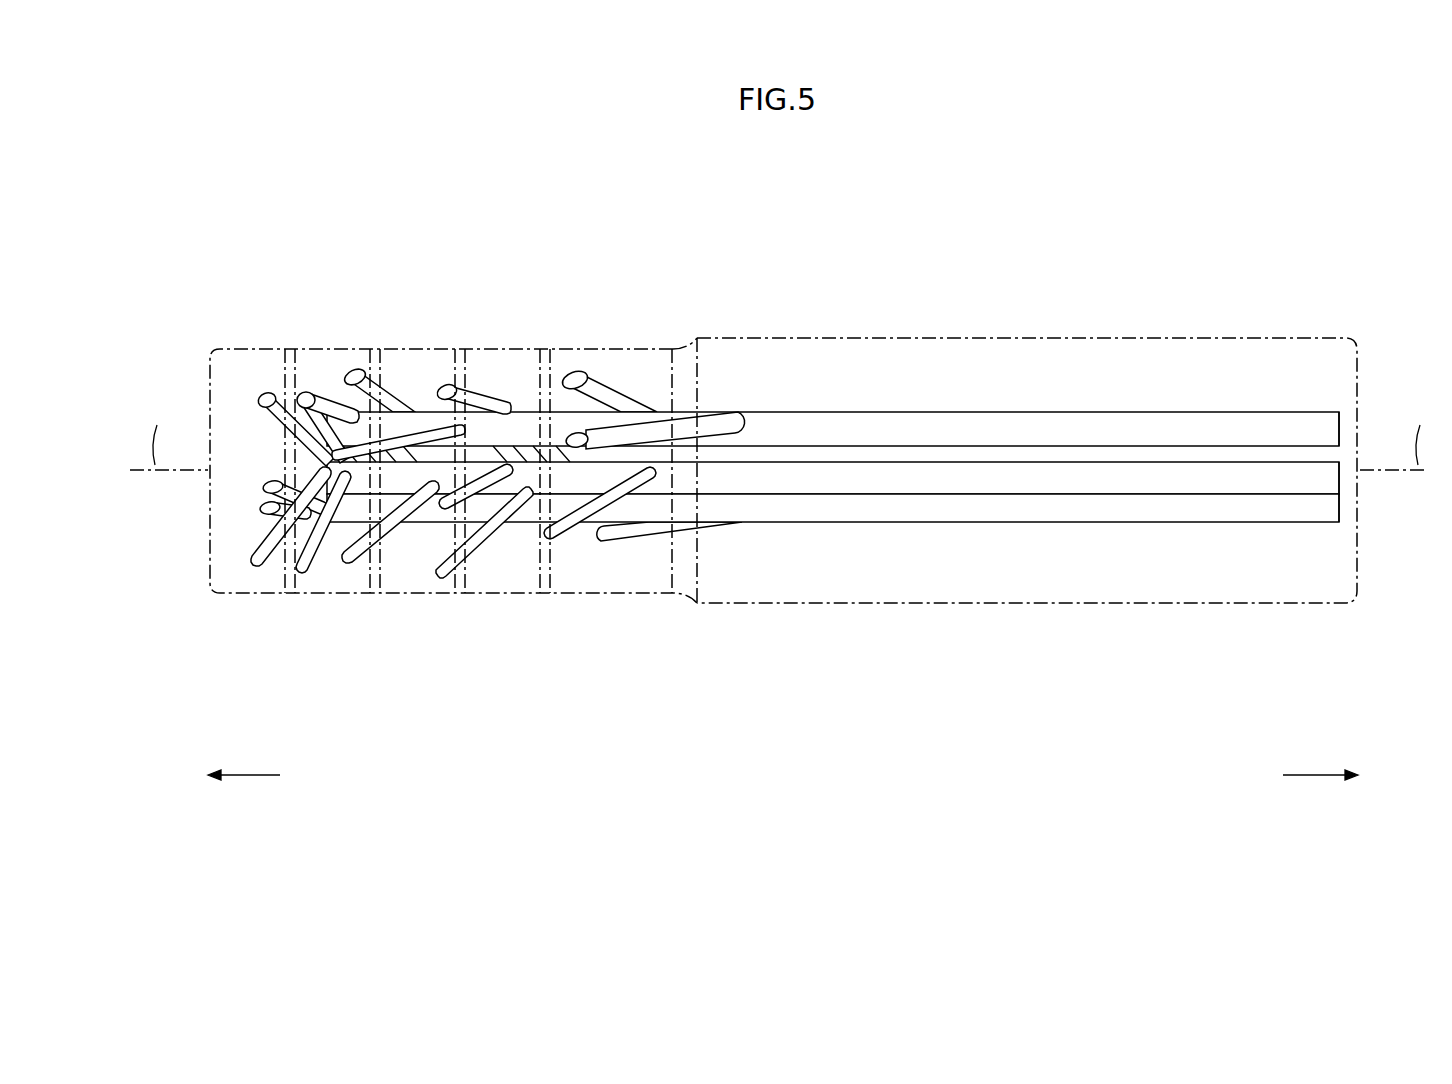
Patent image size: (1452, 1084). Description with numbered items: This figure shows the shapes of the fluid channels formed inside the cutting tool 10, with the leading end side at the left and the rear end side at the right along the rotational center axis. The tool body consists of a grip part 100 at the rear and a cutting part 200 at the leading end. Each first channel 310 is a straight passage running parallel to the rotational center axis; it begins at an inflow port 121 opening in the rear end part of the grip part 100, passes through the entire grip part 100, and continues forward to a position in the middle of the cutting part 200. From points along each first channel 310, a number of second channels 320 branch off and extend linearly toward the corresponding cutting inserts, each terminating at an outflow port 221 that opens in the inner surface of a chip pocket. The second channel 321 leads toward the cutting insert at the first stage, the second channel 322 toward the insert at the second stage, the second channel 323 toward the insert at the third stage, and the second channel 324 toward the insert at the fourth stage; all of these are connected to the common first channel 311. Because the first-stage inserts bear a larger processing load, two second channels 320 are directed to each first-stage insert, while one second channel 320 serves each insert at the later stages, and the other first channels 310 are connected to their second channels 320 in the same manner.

The cutting tool 10 is at (1302, 208).
The grip part 100 is at (1178, 338).
The cutting part 200 is at (520, 349).
The outflow port 221 is at (263, 387).
The inflow port 121 is at (1340, 427).
The first channel 310 is at (1010, 425).
The first channel 311 is at (850, 478).
The second channel 320 is at (285, 465).
The second channel 321 is at (272, 567).
The second channel 322 is at (398, 611).
The second channel 323 is at (484, 587).
The second channel 324 is at (600, 604).